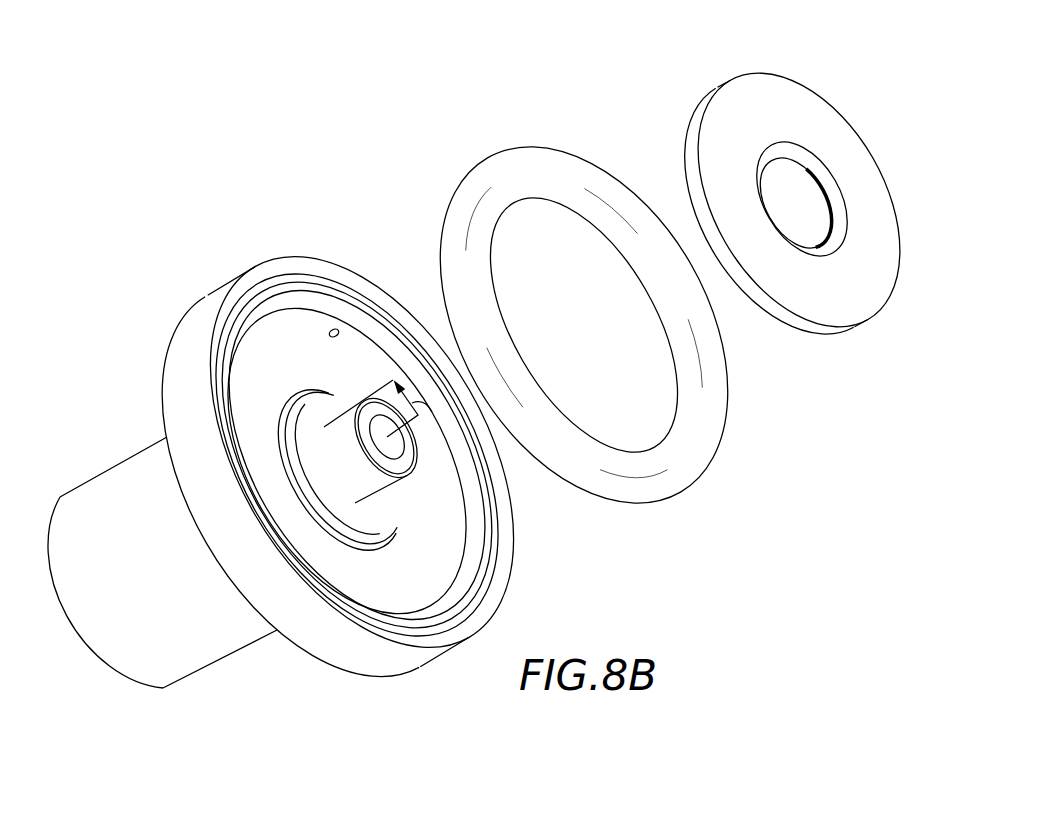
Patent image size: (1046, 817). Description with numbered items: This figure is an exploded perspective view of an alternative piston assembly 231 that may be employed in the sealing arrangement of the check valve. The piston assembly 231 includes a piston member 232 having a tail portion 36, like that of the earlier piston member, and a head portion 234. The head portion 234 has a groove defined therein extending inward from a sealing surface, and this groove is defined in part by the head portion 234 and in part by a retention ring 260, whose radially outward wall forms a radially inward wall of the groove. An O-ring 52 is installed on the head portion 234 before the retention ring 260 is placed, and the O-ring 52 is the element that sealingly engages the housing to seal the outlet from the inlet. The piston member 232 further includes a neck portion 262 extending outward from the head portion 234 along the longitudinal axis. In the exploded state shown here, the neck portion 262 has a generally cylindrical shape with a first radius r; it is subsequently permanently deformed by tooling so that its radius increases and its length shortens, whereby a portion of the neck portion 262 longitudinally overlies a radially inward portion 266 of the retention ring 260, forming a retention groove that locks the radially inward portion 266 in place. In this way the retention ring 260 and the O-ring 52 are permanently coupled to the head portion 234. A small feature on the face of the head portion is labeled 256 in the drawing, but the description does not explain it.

The piston assembly 231 is at (495, 380).
The piston member 232 is at (332, 464).
The head portion 234 is at (400, 657).
The tail portion 36 is at (107, 493).
The O-ring 52 is at (688, 498).
The aperture 256 is at (332, 339).
The retention ring 260 is at (765, 199).
The neck portion 262 is at (407, 474).
The radially inward portion 266 is at (838, 229).